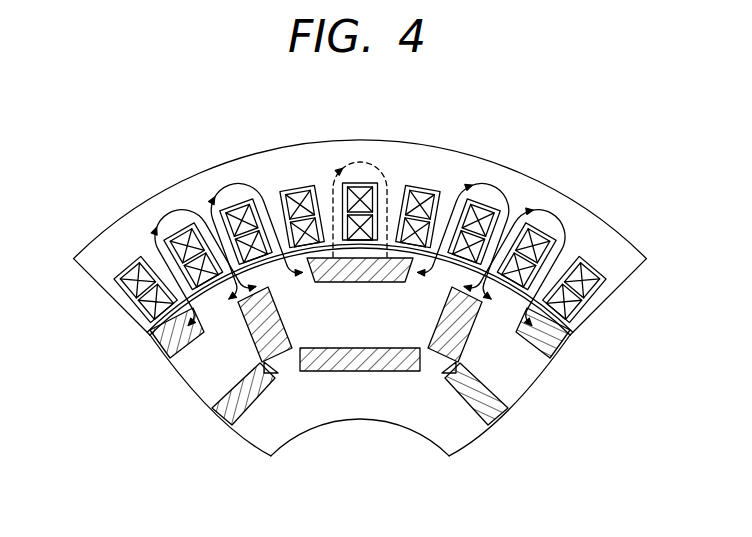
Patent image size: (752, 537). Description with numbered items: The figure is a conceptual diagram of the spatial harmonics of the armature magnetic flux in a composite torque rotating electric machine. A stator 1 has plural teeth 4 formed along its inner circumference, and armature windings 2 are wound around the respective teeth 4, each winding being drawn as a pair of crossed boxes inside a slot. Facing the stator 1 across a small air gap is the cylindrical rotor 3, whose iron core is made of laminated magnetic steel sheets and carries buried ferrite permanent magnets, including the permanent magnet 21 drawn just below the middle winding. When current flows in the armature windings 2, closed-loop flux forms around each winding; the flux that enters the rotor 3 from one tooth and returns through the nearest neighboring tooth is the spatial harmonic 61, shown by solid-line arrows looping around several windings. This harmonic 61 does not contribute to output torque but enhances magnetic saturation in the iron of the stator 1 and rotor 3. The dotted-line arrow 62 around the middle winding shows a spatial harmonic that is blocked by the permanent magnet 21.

The stator 1 is at (98, 243).
The armature windings 2 is at (293, 193).
The rotor 3 is at (360, 372).
The teeth 4 is at (327, 198).
The permanent magnet 21 is at (385, 273).
The spatial harmonic 61 is at (160, 216).
The spatial harmonic (blocked) 62 is at (375, 165).